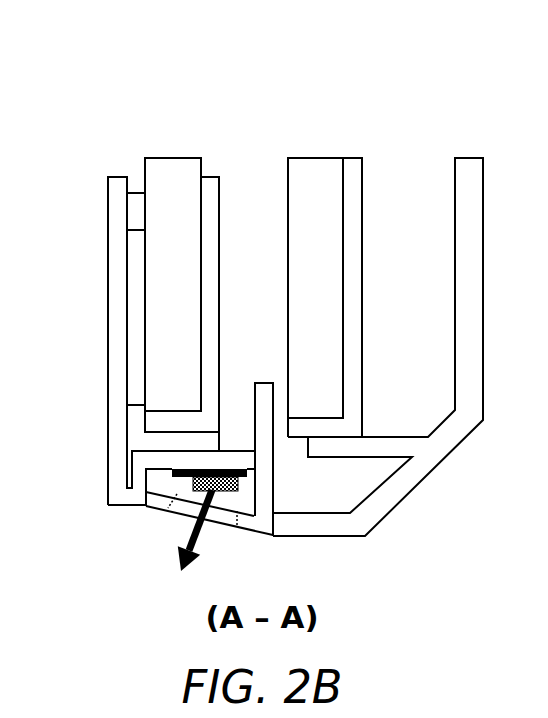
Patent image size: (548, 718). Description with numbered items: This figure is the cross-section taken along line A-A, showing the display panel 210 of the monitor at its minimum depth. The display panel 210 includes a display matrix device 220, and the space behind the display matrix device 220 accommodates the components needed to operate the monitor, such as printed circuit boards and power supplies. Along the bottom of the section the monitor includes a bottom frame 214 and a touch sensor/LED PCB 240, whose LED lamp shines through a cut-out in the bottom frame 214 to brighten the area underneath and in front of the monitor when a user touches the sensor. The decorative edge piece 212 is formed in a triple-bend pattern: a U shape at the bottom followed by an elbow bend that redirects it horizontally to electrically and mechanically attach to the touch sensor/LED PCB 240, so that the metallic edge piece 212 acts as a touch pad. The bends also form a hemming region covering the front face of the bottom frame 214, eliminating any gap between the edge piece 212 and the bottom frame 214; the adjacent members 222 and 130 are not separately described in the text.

The display panel 210 is at (172, 72).
The decorative edge piece 212 is at (108, 191).
The bottom frame 214 is at (265, 536).
The display matrix device 220 is at (158, 158).
The second magnet block 222 is at (310, 158).
The frame member 130 is at (470, 158).
The touch sensor/LED PCB 240 is at (178, 478).